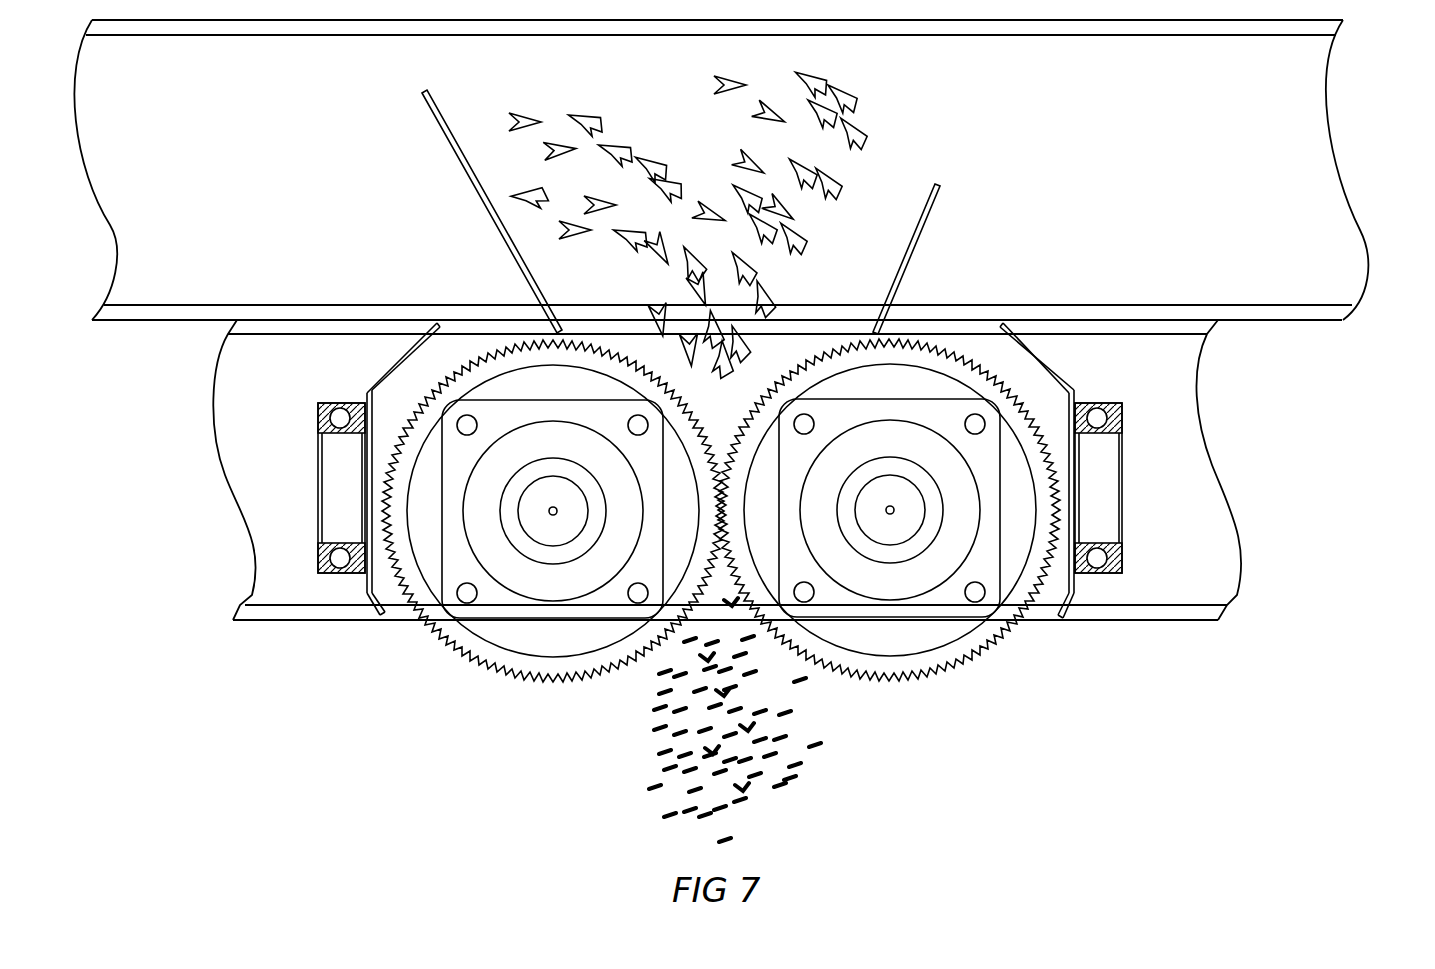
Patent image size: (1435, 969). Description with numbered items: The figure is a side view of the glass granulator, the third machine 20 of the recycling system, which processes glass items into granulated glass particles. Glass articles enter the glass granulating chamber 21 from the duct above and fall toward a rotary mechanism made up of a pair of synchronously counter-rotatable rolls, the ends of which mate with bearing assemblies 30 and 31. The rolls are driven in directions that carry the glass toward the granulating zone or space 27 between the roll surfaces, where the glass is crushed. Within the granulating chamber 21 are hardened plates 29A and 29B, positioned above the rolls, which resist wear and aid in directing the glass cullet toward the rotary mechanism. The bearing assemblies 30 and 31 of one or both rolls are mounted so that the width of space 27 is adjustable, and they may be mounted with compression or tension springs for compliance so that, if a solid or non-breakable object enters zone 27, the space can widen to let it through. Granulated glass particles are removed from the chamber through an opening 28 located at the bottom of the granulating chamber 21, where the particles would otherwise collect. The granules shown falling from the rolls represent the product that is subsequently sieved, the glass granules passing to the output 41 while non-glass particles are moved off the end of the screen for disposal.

The glass granulator 20 is at (1233, 465).
The glass granulating chamber 21 is at (837, 93).
The granulating zone 27 is at (727, 410).
The opening 28 is at (727, 632).
The plate 29A is at (481, 197).
The plate 29B is at (927, 223).
The bearing assembly 30 is at (500, 620).
The bearing assembly 31 is at (877, 622).
The output 41 is at (645, 723).